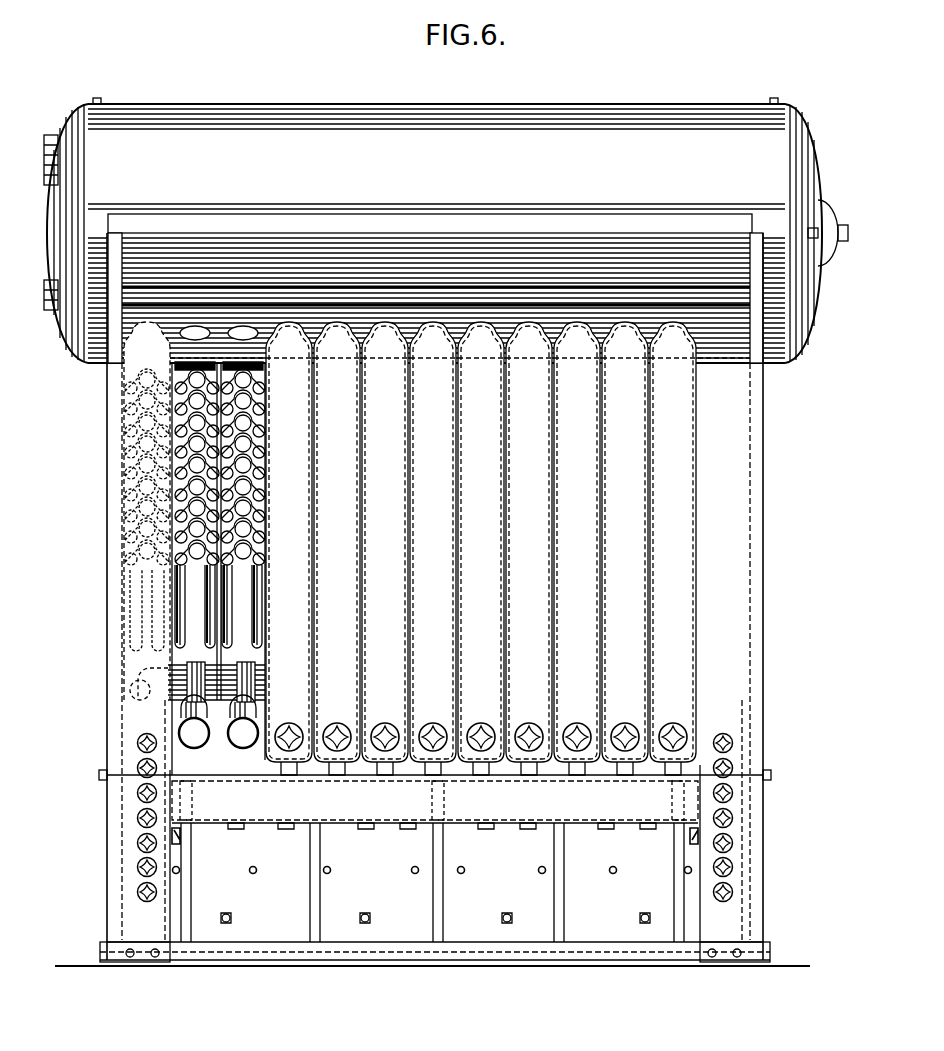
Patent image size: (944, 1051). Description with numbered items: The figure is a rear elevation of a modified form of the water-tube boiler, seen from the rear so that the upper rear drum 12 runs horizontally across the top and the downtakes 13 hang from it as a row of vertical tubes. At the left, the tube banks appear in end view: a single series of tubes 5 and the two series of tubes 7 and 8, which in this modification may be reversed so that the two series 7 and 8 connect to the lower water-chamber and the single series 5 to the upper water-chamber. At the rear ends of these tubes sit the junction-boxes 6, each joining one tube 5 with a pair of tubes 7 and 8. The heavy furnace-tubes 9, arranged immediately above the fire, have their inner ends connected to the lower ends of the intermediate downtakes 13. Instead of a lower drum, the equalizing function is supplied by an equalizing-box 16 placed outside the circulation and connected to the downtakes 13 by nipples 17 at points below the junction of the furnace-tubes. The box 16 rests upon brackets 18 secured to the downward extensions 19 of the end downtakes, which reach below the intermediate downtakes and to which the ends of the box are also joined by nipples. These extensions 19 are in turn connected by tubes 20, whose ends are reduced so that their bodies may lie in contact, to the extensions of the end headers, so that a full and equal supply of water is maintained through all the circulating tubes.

The tubes 5 is at (166, 379).
The junction-box 6 is at (250, 440).
The tubes 7 is at (178, 648).
The tubes 8 is at (215, 606).
The furnace-tubes 9 is at (240, 742).
The upper rear drum 12 is at (446, 230).
The downtakes 13 is at (436, 548).
The equalizing-box 16 is at (435, 796).
The nipples 17 is at (342, 770).
The brackets 18 is at (180, 833).
The extensions of end downtakes 19 is at (147, 912).
The tubes 20 is at (138, 862).